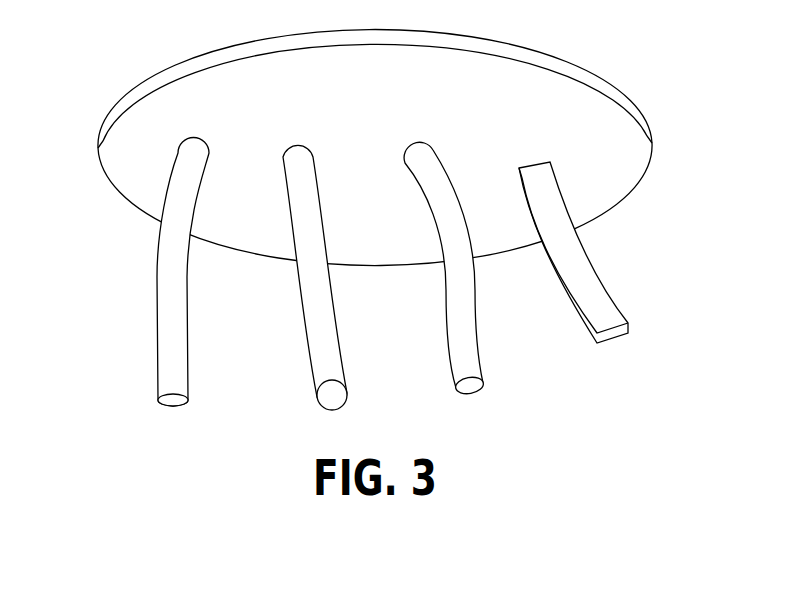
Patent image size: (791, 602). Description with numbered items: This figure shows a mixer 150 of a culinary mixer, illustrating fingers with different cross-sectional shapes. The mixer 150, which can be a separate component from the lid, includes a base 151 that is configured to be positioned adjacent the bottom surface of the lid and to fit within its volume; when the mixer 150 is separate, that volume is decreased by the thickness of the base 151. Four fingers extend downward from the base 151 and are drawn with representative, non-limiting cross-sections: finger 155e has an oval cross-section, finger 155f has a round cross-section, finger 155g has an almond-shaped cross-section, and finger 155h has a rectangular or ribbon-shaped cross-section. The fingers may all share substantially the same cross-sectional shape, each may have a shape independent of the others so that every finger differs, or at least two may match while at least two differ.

The mixer 150 is at (605, 90).
The base 151 is at (627, 158).
The finger 155e is at (162, 343).
The finger 155f is at (304, 349).
The finger 155g is at (478, 347).
The finger 155h is at (610, 302).